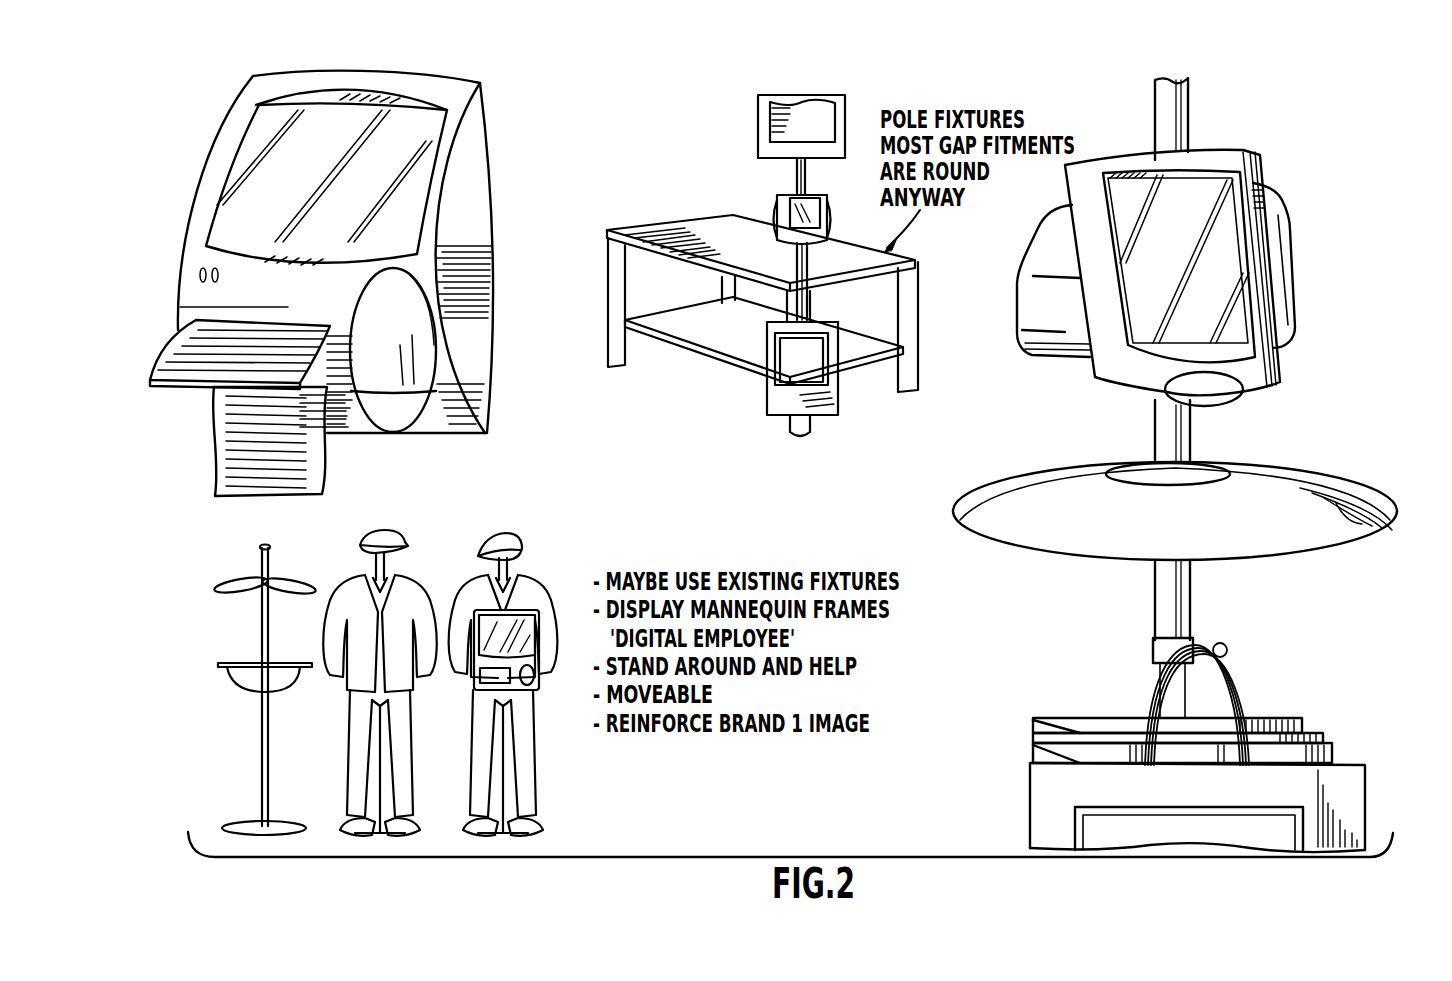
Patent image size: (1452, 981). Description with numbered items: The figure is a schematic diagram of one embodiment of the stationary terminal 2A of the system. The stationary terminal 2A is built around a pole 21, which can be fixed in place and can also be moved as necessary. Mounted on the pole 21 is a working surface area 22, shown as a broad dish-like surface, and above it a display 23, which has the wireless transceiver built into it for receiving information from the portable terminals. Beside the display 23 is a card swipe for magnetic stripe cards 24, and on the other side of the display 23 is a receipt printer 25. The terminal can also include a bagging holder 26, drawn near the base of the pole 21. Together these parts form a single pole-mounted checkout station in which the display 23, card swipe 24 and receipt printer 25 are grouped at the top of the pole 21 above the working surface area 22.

The pole 21 is at (1162, 610).
The working surface area 22 is at (1030, 547).
The display 23 is at (1283, 368).
The card swipe for magnetic stripe cards 24 is at (1293, 273).
The receipt printer 25 is at (1038, 360).
The bagging holder 26 is at (1233, 697).
The stationary terminal 2A is at (1296, 668).